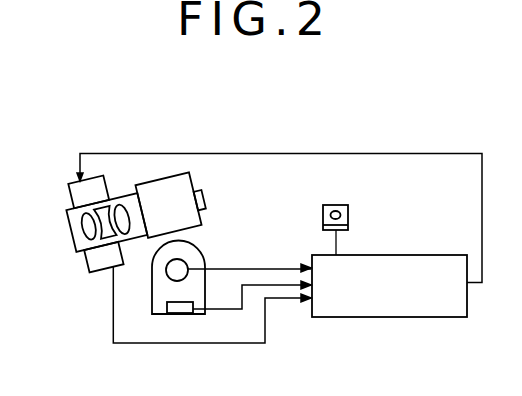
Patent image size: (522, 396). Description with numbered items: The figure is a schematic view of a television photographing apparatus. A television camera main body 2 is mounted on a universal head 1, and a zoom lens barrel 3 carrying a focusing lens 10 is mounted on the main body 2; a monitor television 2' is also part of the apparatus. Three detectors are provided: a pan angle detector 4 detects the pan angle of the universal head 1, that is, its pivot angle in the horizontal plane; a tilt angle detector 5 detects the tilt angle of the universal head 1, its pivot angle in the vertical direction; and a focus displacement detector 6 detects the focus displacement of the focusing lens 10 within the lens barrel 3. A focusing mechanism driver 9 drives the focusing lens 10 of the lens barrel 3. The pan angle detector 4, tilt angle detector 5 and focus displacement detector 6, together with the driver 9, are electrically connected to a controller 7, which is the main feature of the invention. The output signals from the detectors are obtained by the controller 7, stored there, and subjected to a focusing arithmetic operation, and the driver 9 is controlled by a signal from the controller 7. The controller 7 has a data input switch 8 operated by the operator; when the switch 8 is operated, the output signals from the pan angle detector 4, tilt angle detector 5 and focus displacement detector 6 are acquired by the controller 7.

The universal head 1 is at (207, 256).
The television camera main body 2 is at (186, 197).
The monitor television 2' is at (223, 202).
The zoom lens barrel 3 is at (120, 194).
The pan angle detector 4 is at (163, 313).
The tilt angle detector 5 is at (188, 271).
The focus displacement detector 6 is at (90, 272).
The controller 7 is at (358, 317).
The data input switch 8 is at (348, 217).
The focusing mechanism driver 9 is at (72, 183).
The focusing lens 10 is at (68, 218).